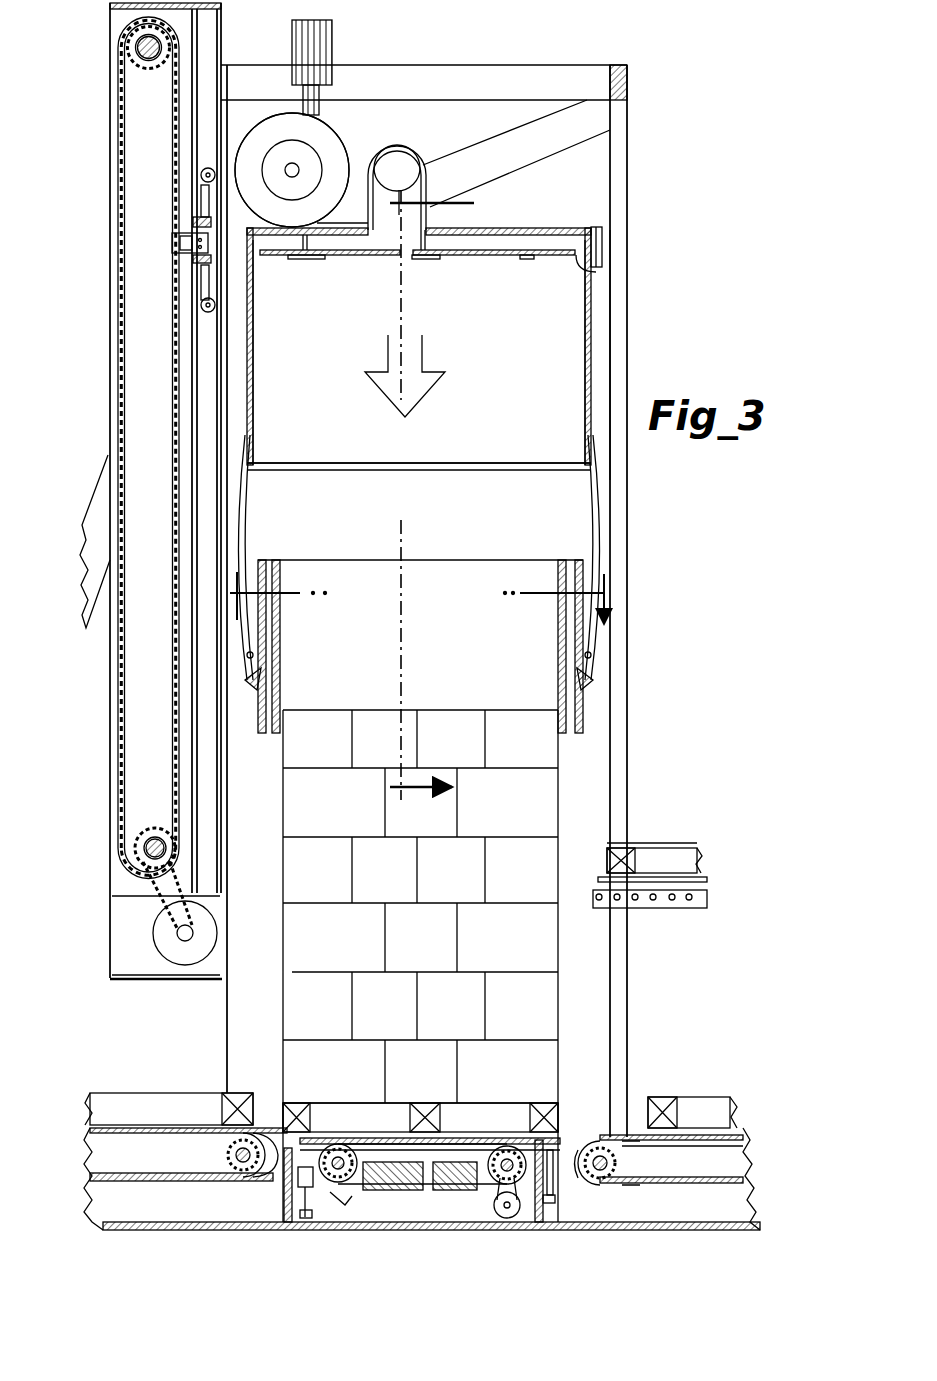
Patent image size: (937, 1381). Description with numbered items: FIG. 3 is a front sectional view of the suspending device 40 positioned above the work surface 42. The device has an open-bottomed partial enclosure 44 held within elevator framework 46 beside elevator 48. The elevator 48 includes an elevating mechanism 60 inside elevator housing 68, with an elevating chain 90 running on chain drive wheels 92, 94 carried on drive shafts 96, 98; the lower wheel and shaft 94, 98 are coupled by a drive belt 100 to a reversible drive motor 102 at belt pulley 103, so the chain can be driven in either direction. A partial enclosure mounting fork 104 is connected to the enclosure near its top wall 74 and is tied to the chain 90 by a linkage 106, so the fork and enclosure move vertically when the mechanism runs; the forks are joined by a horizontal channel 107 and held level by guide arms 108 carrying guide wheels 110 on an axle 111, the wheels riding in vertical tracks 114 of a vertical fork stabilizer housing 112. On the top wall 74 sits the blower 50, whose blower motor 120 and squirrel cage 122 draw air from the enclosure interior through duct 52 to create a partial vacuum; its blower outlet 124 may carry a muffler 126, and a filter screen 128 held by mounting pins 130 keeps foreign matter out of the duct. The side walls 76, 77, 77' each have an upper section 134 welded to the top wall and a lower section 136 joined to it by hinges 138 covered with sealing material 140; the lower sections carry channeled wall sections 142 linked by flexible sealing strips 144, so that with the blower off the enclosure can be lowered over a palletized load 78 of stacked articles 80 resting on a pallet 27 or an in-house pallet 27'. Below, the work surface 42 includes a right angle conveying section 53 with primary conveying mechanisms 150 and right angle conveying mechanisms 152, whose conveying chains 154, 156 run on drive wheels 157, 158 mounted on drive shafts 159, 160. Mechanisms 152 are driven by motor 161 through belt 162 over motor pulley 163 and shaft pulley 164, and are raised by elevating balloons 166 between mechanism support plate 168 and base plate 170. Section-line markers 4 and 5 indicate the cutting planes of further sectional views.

The suspending device 40 is at (752, 100).
The work surface 42 is at (272, 1118).
The partial enclosure 44 is at (596, 290).
The elevator framework 46 is at (627, 70).
The elevator 48 is at (138, 13).
The blower 50 is at (255, 127).
The duct 52 is at (410, 165).
The right angle conveying section 53 is at (541, 1150).
The elevating mechanism 60 is at (120, 48).
The elevator housing 68 is at (135, 7).
The top wall 74 is at (600, 228).
The side wall 76 is at (482, 326).
The side wall 77 is at (271, 346).
The side wall 77' is at (640, 346).
The palletized load 78 is at (273, 870).
The stacked articles 80 is at (532, 860).
The elevating chain 90 is at (118, 135).
The chain drive wheel 92 is at (138, 70).
The chain drive wheel 94 is at (142, 832).
The drive shaft 96 is at (142, 52).
The drive shaft 98 is at (157, 838).
The drive belt 100 is at (148, 888).
The reversible drive motor 102 is at (160, 948).
The belt pulley 103 is at (178, 933).
The partial enclosure mounting fork 104 is at (603, 243).
The linkage 106 is at (190, 244).
The horizontal channel 107 is at (193, 224).
The guide arm 108 is at (205, 195).
The guide wheel 110 is at (202, 172).
The axle 111 is at (205, 178).
The vertical fork stabilizer housing 112 is at (212, 28).
The vertical track 114 is at (192, 340).
The blower motor 120 is at (286, 147).
The squirrel cage 122 is at (328, 143).
The blower outlet 124 is at (318, 230).
The muffler 126 is at (315, 30).
The filter screen 128 is at (596, 278).
The mounting pin 130 is at (370, 200).
The upper section 134 is at (250, 342).
The lower section 136 is at (255, 512).
The hinge 138 is at (257, 463).
The sealing material 140 is at (255, 435).
The channeled wall section 142 is at (410, 570).
The flexible sealing strip 144 is at (276, 560).
The primary conveying mechanism 150 is at (236, 1152).
The right angle conveying mechanism 152 is at (240, 1142).
The conveying chain 154 is at (385, 1165).
The conveying chain 156 is at (300, 1103).
The drive wheel 157 is at (345, 1148).
The drive wheel 158 is at (238, 1140).
The drive shaft 159 is at (333, 1148).
The drive shaft 160 is at (622, 1178).
The motor 161 is at (520, 1180).
The belt 162 is at (470, 1190).
The motor pulley 163 is at (548, 1198).
The shaft pulley 164 is at (512, 1192).
The elevating balloon 166 is at (408, 1162).
The mechanism support plate 168 is at (440, 1162).
The base plate 170 is at (300, 1192).
The pallet 27 is at (389, 957).
The in-house pallet 27' is at (440, 1070).
The section line 4- 4 is at (446, 506).
The section line 5- 5 is at (418, 618).